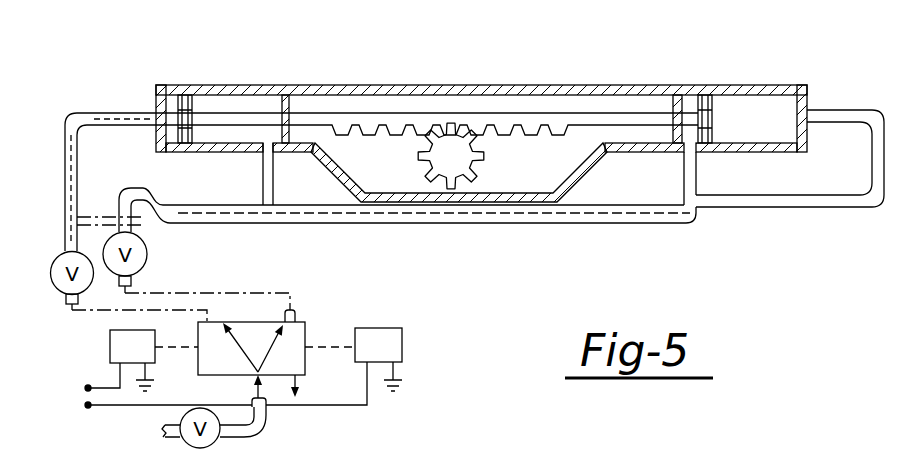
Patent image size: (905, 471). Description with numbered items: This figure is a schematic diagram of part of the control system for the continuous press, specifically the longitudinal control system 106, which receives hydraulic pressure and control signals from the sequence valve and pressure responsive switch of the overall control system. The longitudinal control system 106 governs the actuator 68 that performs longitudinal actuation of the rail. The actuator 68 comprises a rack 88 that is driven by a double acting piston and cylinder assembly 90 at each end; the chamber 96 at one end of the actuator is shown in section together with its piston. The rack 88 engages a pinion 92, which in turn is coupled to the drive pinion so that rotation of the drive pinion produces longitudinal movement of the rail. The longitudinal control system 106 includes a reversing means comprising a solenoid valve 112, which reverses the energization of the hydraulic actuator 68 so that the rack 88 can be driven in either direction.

The actuator 68 is at (606, 81).
The left cylinder chamber 96 is at (230, 102).
The rack 88 is at (465, 118).
The pinion 92 is at (473, 160).
The double acting piston and cylinder assembly 90 is at (735, 100).
The solenoid valve 112 is at (310, 318).
The longitudinal control system 106 is at (99, 326).